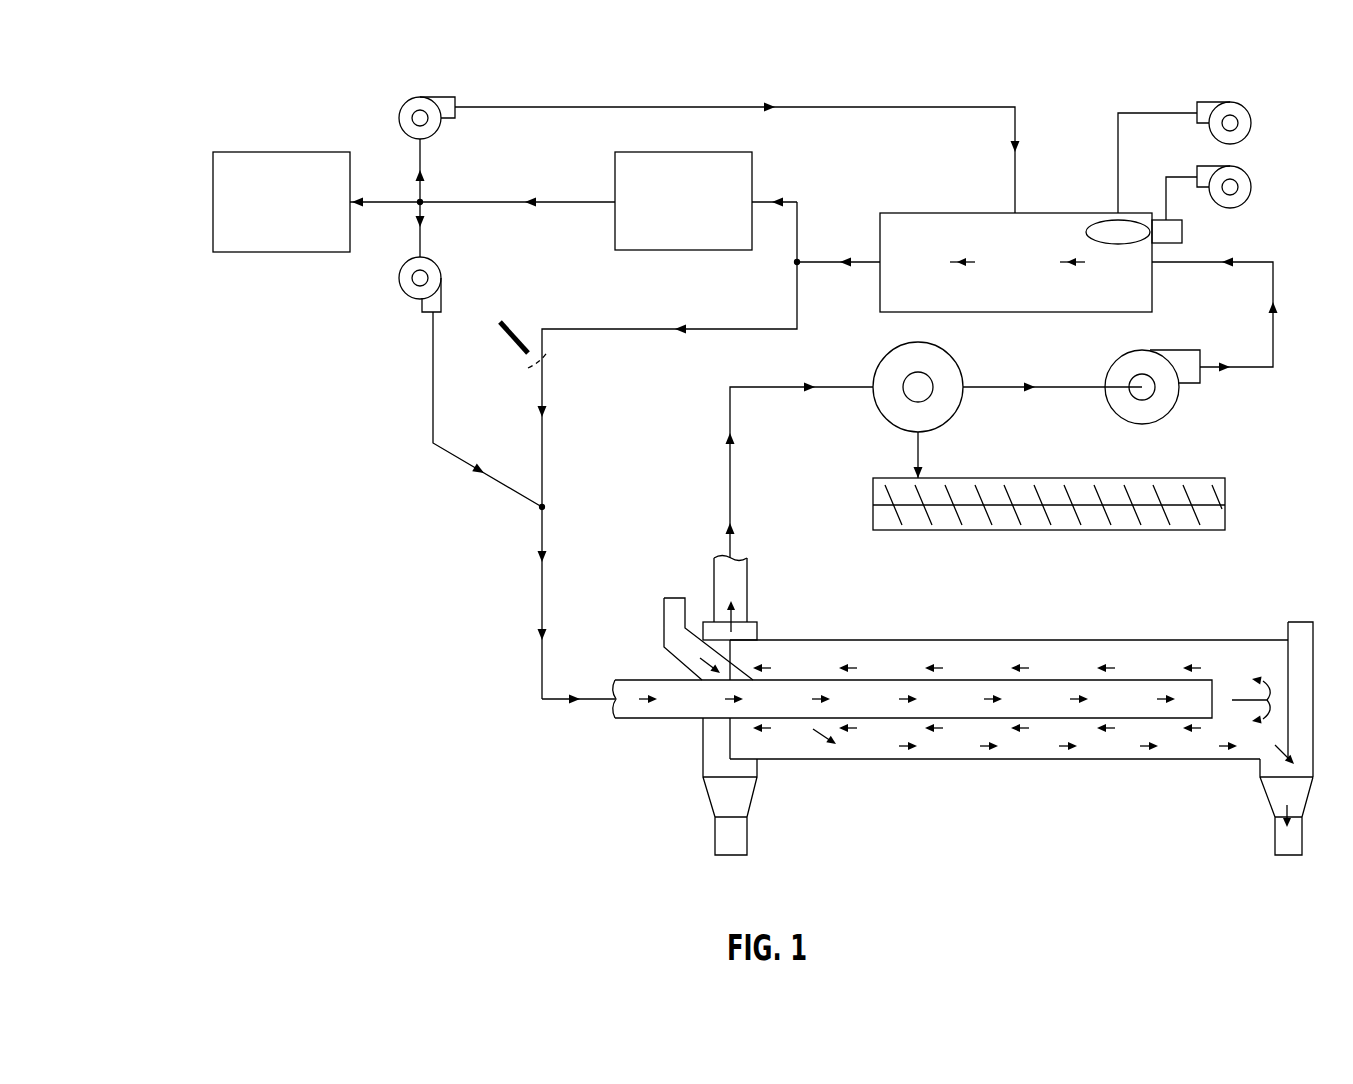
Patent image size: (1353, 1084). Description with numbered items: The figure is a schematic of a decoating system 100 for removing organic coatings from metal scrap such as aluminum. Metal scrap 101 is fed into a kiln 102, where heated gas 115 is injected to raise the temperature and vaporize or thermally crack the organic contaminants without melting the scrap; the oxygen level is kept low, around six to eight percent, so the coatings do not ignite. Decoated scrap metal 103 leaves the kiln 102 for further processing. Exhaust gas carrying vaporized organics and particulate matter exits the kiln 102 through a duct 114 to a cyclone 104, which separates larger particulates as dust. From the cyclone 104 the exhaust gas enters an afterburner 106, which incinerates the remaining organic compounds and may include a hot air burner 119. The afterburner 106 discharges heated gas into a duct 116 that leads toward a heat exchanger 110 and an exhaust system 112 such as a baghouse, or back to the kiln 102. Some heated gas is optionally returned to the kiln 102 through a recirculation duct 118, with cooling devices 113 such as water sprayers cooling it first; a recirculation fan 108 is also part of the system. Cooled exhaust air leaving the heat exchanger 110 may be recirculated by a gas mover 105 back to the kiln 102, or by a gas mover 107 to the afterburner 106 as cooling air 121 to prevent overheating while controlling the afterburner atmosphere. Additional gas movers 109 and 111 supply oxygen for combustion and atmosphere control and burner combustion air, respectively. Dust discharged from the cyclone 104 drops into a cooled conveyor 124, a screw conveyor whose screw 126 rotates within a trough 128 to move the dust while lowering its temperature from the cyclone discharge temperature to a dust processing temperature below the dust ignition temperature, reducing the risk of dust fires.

The decoating system 100 is at (143, 100).
The metal scrap 101 is at (675, 580).
The kiln 102 is at (876, 746).
The decoated scrap metal 103 is at (1288, 874).
The cyclone 104 is at (878, 415).
The gas mover 105 is at (399, 284).
The afterburner 106 is at (880, 228).
The gas mover 107 is at (399, 117).
The recirculation fan 108 is at (1173, 410).
The gas mover 109 is at (1253, 123).
The heat exchanger 110 is at (615, 222).
The gas mover 111 is at (1253, 187).
The exhaust system 112 is at (213, 200).
The cooling devices 113 is at (520, 343).
The duct 114 is at (730, 410).
The heated gas 115 is at (594, 706).
The duct 116 is at (810, 264).
The recirculation duct 118 is at (737, 327).
The hot air burner 119 is at (1182, 222).
The cooling air 121 is at (683, 105).
The cooled conveyor 124 is at (1035, 547).
The screw 126 is at (1178, 524).
The trough 128 is at (1003, 531).